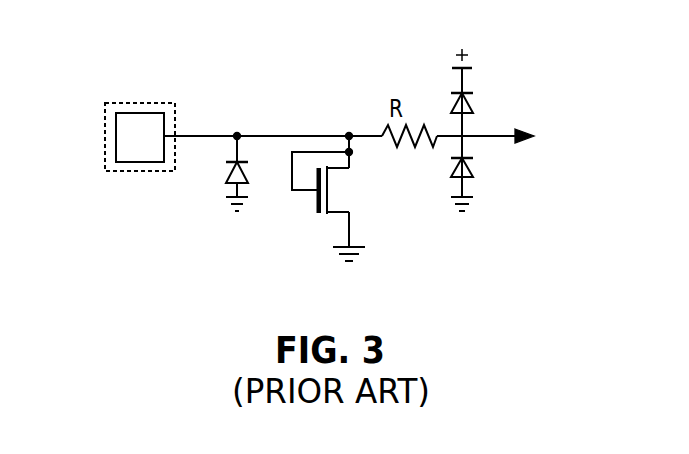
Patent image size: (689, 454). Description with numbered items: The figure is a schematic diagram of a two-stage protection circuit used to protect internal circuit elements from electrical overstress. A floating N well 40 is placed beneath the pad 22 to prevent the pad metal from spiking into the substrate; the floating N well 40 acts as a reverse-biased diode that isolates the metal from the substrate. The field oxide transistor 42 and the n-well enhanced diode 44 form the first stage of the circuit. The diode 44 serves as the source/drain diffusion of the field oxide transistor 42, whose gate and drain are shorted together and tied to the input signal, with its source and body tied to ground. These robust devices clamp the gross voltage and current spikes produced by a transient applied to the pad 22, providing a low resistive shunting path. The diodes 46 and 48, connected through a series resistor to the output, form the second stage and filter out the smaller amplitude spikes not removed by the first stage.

The pad 22 is at (140, 137).
The floating N well 40 is at (131, 172).
The field oxide transistor 42 is at (333, 215).
The n-well enhanced diode 44 is at (227, 173).
The diode 46 is at (470, 92).
The diode 48 is at (454, 162).